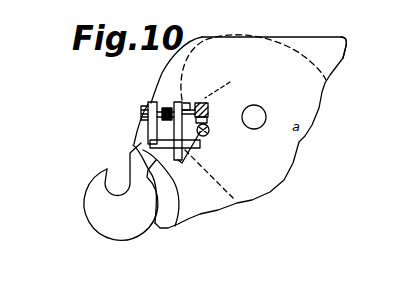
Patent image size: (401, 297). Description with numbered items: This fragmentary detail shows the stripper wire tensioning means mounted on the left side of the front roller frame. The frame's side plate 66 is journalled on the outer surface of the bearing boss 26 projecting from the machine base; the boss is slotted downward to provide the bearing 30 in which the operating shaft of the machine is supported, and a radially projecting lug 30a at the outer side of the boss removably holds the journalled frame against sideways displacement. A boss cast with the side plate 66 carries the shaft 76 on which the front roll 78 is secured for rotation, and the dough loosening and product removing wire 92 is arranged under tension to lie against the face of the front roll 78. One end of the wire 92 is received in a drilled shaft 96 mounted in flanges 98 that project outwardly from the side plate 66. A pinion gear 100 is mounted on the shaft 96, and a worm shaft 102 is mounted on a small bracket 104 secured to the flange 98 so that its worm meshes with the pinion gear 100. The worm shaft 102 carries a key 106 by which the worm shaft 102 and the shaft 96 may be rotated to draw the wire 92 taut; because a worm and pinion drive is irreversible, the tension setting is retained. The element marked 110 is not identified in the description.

The bearing boss 26 is at (140, 218).
The bearing 30 is at (105, 183).
The radially projecting lug 30a is at (140, 148).
The side plate 66 is at (314, 45).
The shaft 76 is at (263, 115).
The front roll 78 is at (258, 44).
The dough loosening and product removing wire 92 is at (148, 115).
The shaft 96 is at (185, 103).
The flange 98 is at (161, 101).
The pinion gear 100 is at (206, 110).
The worm shaft 102 is at (212, 131).
The small bracket 104 is at (190, 150).
The key 106 is at (210, 123).
The spring 110 is at (234, 84).